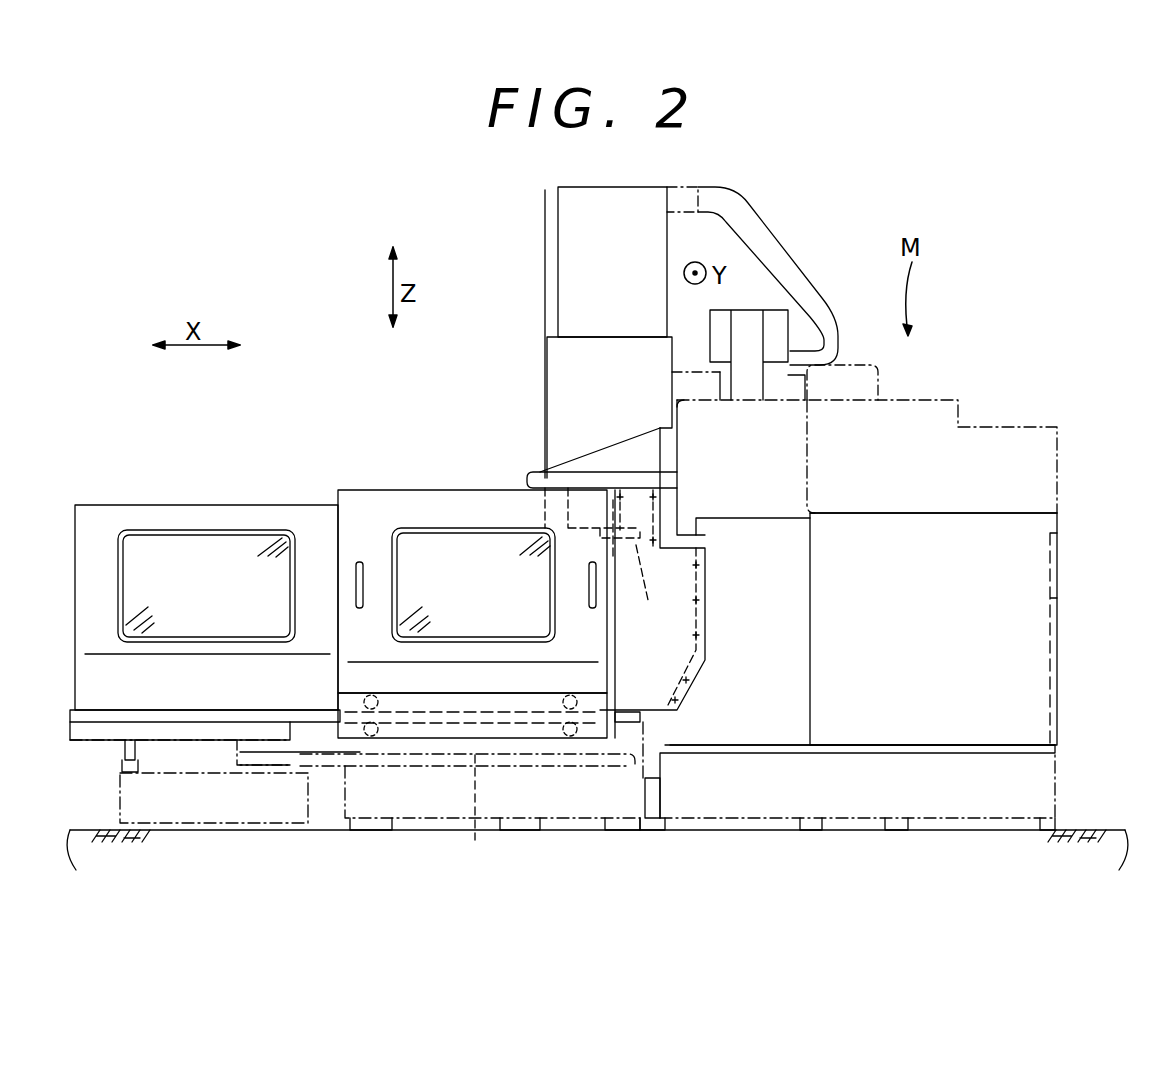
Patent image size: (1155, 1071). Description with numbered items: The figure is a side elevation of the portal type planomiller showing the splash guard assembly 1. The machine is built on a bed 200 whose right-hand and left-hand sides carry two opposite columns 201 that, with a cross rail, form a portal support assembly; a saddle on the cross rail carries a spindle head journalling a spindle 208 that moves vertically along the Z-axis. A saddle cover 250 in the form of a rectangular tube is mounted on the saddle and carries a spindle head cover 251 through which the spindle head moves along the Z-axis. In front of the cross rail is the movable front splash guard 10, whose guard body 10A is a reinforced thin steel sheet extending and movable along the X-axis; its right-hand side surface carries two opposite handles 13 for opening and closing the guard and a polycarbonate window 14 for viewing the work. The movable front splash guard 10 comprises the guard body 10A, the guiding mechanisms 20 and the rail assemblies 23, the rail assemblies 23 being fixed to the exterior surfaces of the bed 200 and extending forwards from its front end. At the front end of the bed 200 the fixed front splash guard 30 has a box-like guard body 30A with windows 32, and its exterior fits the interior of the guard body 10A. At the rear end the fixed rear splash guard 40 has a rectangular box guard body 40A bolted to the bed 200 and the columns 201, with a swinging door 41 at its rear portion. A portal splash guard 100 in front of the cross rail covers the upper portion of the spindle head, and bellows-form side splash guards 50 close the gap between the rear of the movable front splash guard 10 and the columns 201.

The splash guard assembly 1 is at (345, 347).
The movable front splash guard 10 is at (358, 487).
The guard body 10A is at (385, 505).
The handles 13 is at (590, 578).
The window 14 is at (422, 540).
The guiding mechanisms 20 is at (405, 730).
The rail assemblies 23 is at (469, 817).
The fixed front splash guard 30 is at (215, 490).
The guard body 30A is at (273, 520).
The windows 32 is at (148, 555).
The fixed rear splash guard 40 is at (1012, 500).
The guard body 40A is at (918, 530).
The swinging door 41 is at (1057, 598).
The side splash guards 50 is at (710, 682).
The portal splash guard 100 is at (582, 444).
The bed 200 is at (585, 805).
The columns 201 is at (790, 618).
The spindle 208 is at (656, 597).
The saddle cover 250 is at (568, 355).
The spindle head cover 251 is at (581, 253).